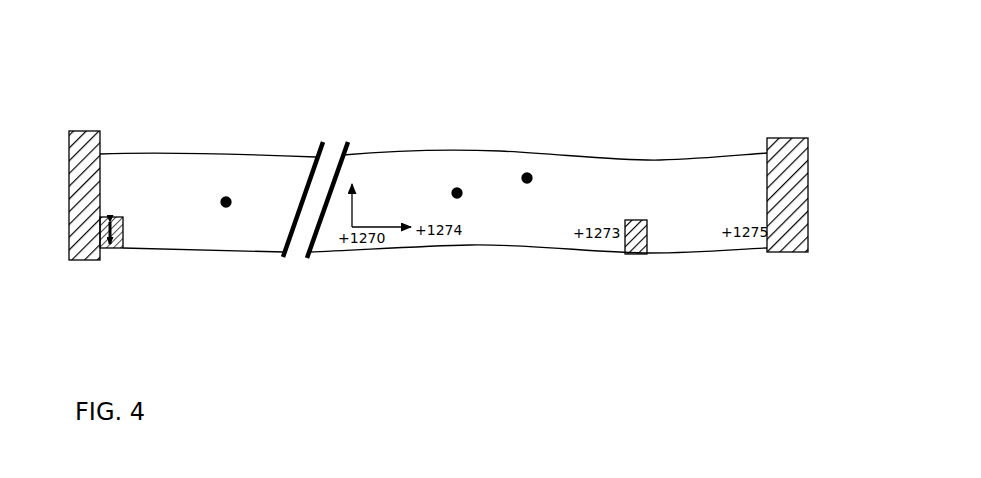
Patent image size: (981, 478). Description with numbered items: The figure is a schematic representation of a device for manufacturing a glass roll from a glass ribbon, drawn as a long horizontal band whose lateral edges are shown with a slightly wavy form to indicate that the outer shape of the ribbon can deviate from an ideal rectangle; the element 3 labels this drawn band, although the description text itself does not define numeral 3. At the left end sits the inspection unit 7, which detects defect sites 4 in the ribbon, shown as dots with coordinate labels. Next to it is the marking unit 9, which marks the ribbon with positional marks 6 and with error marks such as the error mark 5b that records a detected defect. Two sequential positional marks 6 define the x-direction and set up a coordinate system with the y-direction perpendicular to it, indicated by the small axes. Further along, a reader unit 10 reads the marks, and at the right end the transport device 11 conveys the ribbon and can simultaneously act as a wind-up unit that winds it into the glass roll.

The rail / beam 3 is at (165, 176).
The defect sites 4 is at (226, 193).
The error mark 5b is at (470, 207).
The positional marks 6 is at (265, 246).
The inspection unit 7 is at (86, 265).
The marking unit 9 is at (118, 253).
The reader unit 10 is at (636, 257).
The transport device 11 is at (787, 246).